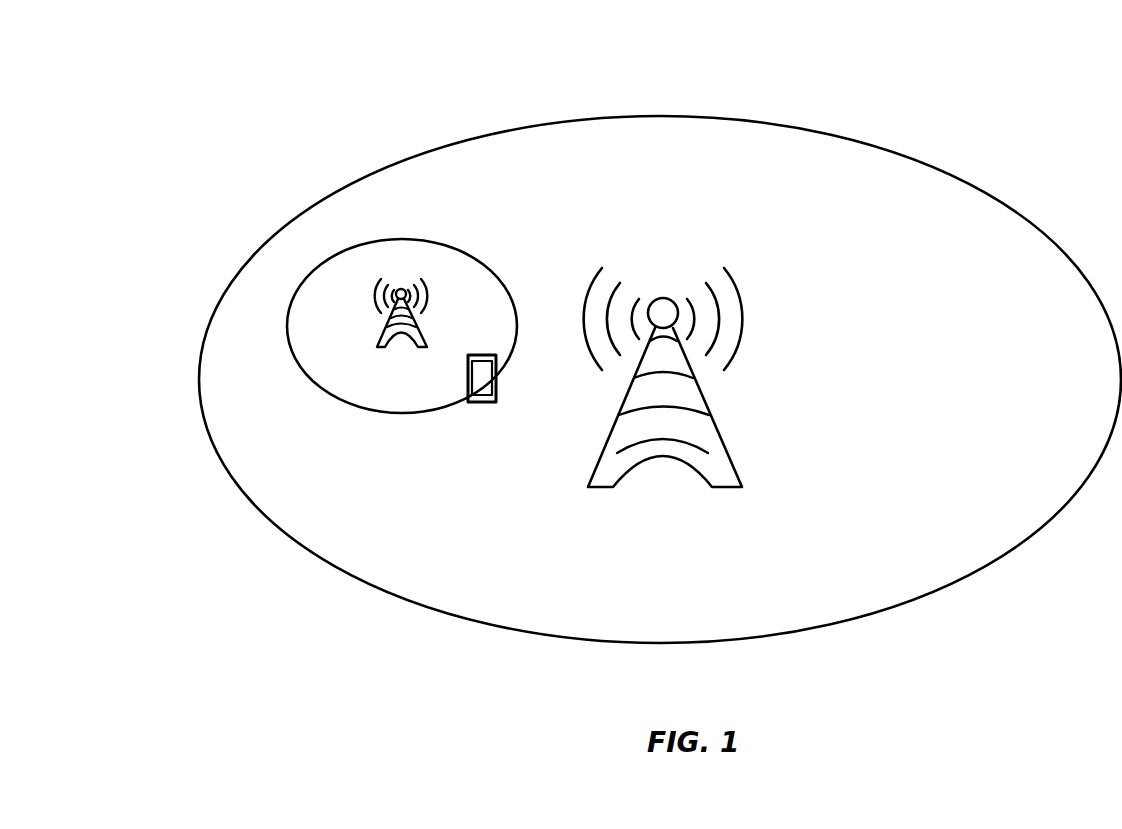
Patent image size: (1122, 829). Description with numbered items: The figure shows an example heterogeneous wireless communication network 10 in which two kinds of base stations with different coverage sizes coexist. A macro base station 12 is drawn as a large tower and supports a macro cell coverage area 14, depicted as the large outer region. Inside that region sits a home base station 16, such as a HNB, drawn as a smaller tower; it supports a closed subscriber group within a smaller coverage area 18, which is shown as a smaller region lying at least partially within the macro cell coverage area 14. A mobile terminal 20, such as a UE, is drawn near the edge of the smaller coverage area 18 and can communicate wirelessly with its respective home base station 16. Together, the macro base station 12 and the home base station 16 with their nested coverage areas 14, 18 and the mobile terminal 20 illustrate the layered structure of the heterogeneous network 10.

The heterogeneous network 10 is at (297, 98).
The macro base station 12 is at (733, 483).
The macro cell coverage area 14 is at (983, 187).
The home base station 16 is at (399, 290).
The smaller coverage area 18 is at (460, 250).
The mobile terminal 20 is at (467, 370).